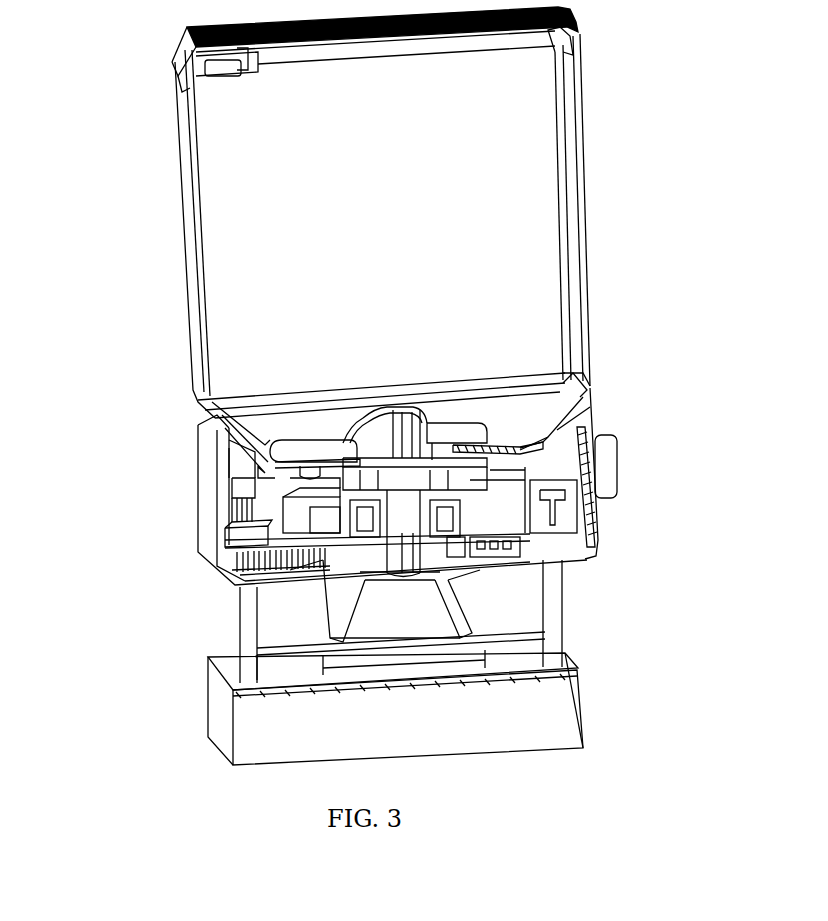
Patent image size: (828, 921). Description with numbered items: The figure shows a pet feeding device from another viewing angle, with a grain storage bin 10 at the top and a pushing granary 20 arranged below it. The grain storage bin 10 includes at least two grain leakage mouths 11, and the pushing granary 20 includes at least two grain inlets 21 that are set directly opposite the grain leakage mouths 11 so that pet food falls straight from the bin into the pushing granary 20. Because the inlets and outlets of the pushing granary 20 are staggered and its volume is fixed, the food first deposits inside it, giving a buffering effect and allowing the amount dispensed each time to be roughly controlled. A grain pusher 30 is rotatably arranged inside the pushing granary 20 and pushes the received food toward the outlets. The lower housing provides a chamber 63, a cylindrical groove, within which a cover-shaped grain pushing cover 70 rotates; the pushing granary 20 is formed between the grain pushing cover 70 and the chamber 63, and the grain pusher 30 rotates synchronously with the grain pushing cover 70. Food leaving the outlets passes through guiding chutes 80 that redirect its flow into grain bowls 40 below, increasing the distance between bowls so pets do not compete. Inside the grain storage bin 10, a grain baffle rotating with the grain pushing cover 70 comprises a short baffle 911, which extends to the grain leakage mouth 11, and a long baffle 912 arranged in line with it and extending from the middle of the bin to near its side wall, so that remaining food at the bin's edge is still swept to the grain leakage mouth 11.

The grain storage bin 10 is at (525, 198).
The grain leakage mouth 11 is at (207, 428).
The pushing granary 20 is at (198, 556).
The grain inlet 21 is at (280, 493).
The grain pusher 30 is at (345, 515).
The grain bowl 40 is at (480, 657).
The chamber 63 is at (497, 443).
The grain pushing cover 70 is at (580, 433).
The guiding chute 80 is at (427, 612).
The short baffle 911 is at (465, 437).
The long baffle 912 is at (330, 457).